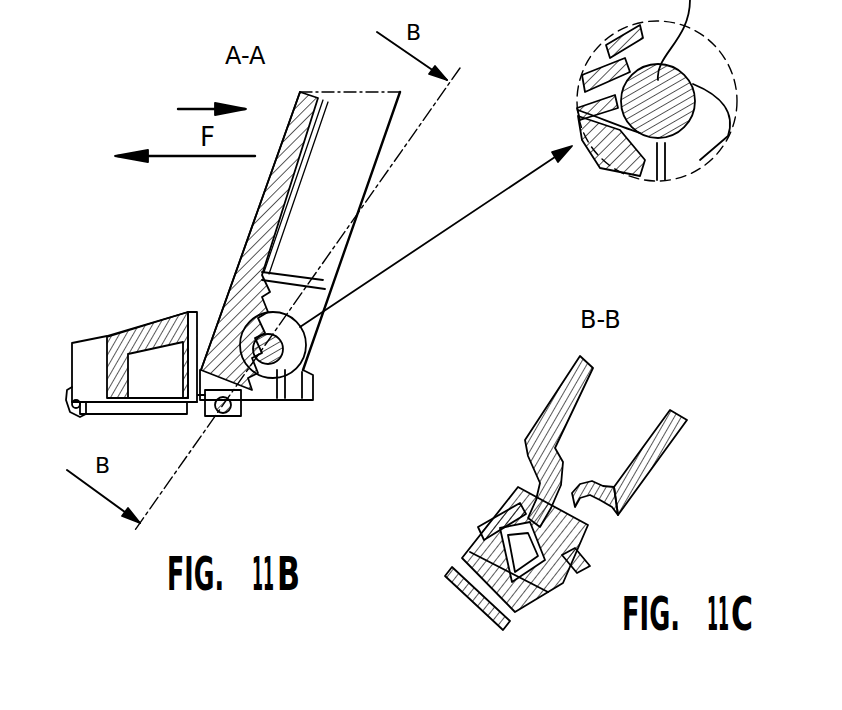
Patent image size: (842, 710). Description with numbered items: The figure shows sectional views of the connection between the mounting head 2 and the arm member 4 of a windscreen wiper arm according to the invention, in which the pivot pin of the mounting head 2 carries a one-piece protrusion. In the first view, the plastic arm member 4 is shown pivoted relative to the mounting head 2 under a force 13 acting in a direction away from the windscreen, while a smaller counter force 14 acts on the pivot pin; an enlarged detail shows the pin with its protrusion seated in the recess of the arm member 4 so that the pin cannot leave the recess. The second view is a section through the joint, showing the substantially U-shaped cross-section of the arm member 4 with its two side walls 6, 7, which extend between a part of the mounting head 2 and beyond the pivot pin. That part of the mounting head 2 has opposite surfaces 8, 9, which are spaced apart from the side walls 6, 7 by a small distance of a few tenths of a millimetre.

In FIG. 11B, the mounting head 2 is at (149, 335).
In FIG. 11C, the mounting head 2 is at (520, 622).
In FIG. 11B, the arm member 4 is at (262, 203).
In FIG. 11C, the arm member 4 is at (657, 452).
In FIG. 11C, the side wall 6 is at (573, 507).
In FIG. 11C, the side wall 7 is at (533, 518).
In FIG. 11C, the opposite surface 8 is at (566, 556).
In FIG. 11C, the opposite surface 9 is at (463, 558).
In FIG. 11B, the force 13 is at (197, 158).
In FIG. 11B, the counter force 14 is at (196, 108).